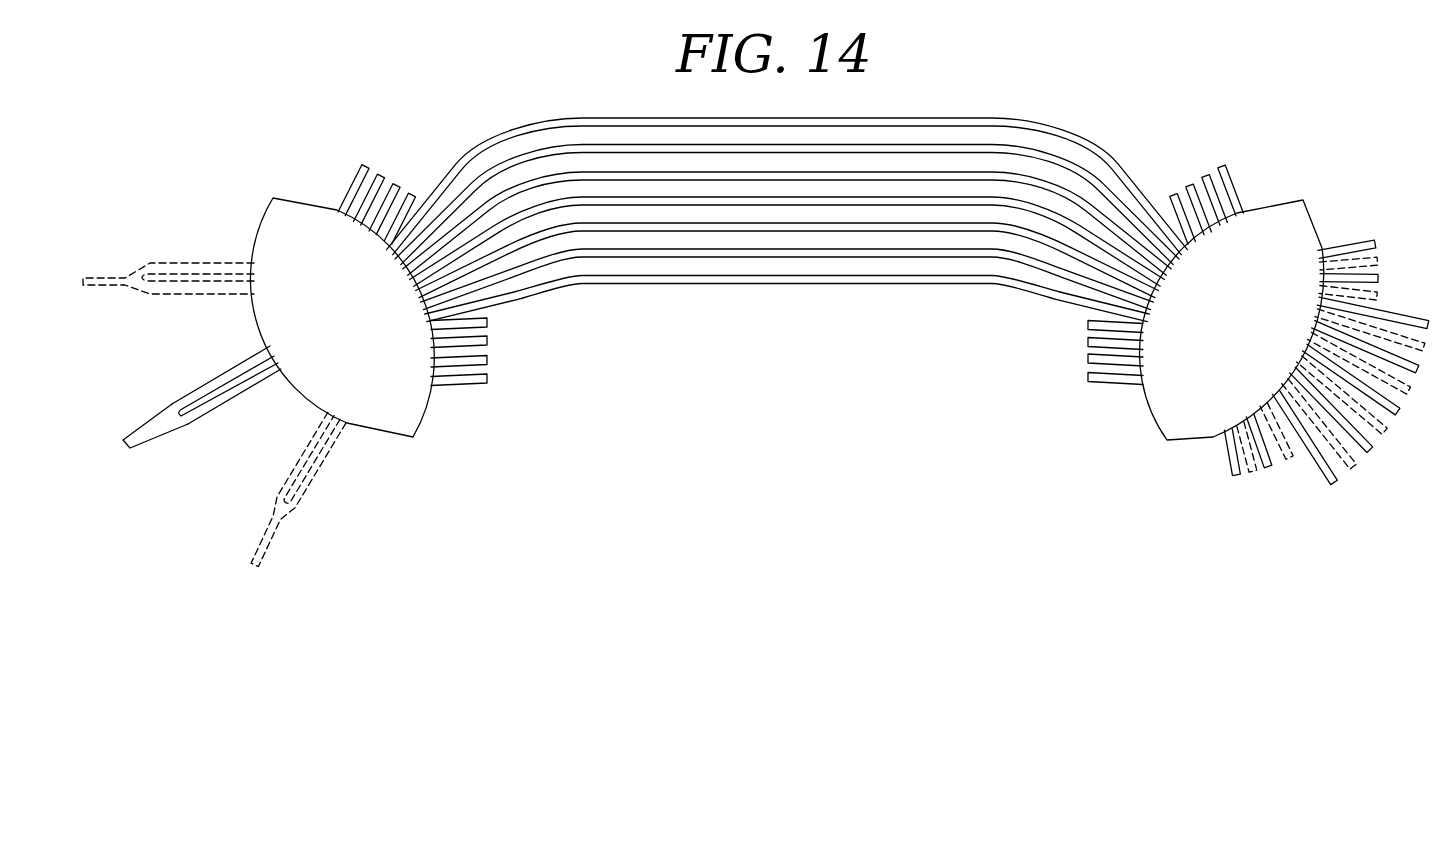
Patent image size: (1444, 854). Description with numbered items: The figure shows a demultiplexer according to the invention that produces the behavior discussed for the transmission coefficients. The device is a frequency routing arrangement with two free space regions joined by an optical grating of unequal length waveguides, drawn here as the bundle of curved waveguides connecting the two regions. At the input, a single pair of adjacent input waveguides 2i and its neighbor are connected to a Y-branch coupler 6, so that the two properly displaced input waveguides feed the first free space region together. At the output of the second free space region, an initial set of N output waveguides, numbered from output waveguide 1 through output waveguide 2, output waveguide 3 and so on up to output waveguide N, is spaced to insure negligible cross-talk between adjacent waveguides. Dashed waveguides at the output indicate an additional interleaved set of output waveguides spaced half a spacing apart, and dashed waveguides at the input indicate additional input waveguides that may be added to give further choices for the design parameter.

The output waveguides N is at (1356, 240).
The output waveguide 1 is at (1235, 473).
The output waveguide 2 is at (1265, 457).
The output waveguide 3 is at (1310, 452).
The Y-branch coupler 6 is at (168, 409).
The input waveguide 2i is at (173, 402).